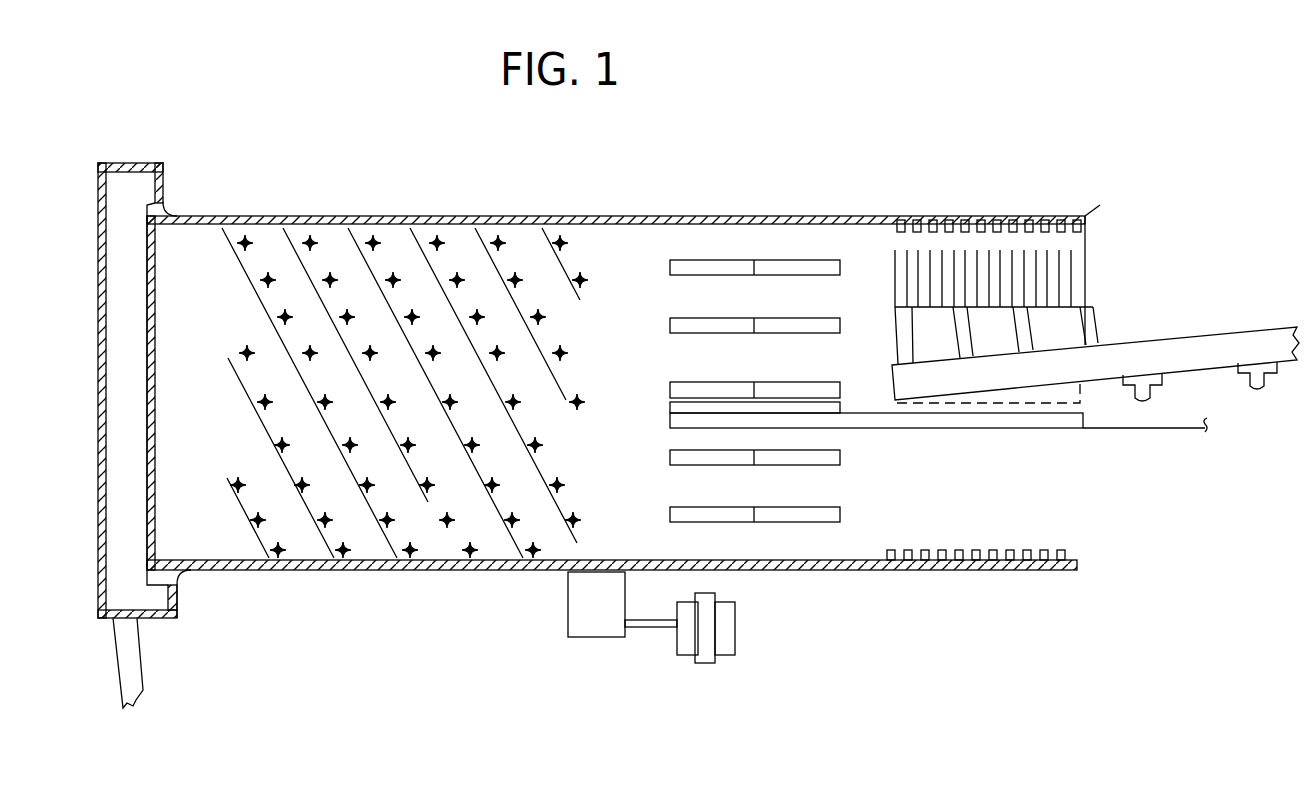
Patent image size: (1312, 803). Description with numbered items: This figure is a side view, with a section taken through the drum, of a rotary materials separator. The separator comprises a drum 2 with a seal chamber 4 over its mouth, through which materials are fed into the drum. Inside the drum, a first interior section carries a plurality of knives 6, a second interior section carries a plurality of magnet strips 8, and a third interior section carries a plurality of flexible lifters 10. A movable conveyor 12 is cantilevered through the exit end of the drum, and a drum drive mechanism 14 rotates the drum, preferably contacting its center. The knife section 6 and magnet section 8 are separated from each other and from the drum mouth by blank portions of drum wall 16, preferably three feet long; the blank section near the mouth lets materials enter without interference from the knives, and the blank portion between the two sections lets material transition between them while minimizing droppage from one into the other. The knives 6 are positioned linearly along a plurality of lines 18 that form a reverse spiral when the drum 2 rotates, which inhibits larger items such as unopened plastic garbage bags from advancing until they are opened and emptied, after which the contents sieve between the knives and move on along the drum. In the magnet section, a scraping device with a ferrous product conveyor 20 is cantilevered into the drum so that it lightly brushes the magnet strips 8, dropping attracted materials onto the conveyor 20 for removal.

The drum 2 is at (1092, 214).
The seal chamber 4 is at (100, 240).
The knives 6 is at (400, 207).
The magnet strips 8 is at (690, 207).
The flexible lifters 10 is at (955, 207).
The movable conveyor 12 is at (1152, 325).
The drum drive mechanism 14 is at (588, 645).
The blank portion of drum wall 16 is at (193, 207).
The lines 18 is at (397, 571).
The ferrous product conveyor 20 is at (1135, 445).